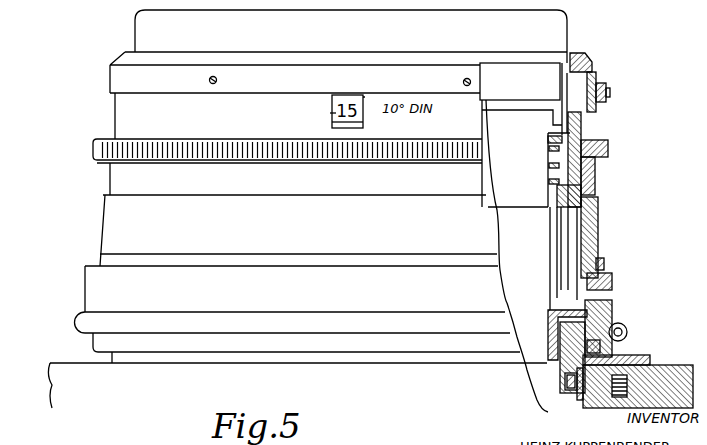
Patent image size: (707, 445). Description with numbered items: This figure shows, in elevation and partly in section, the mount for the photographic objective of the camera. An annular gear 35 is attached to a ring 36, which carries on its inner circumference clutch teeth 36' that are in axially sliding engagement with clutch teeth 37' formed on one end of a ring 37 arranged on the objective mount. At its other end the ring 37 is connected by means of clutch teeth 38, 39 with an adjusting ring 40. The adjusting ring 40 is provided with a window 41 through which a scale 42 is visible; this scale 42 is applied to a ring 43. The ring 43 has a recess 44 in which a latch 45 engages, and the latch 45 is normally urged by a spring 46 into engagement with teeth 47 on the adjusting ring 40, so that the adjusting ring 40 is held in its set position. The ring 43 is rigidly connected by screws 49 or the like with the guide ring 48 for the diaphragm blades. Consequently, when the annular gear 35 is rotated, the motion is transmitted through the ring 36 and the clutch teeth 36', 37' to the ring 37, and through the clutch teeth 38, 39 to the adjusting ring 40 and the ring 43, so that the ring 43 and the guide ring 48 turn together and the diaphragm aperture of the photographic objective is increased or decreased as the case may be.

The annular gear 35 is at (577, 378).
The ring 36 is at (533, 357).
The clutch teeth 36' is at (529, 394).
The ring 37 is at (616, 323).
The clutch teeth 37' is at (529, 335).
The clutch teeth 38 is at (604, 263).
The clutch teeth 39 is at (568, 238).
The adjusting ring 40 is at (117, 147).
The window 41 is at (332, 115).
The scale 42 is at (381, 86).
The ring 43 is at (586, 64).
The recess 44 is at (598, 80).
The latch 45 is at (610, 148).
The spring 46 is at (548, 162).
The teeth 47 is at (586, 205).
The guide ring 48 is at (528, 70).
The screws 49 is at (207, 87).